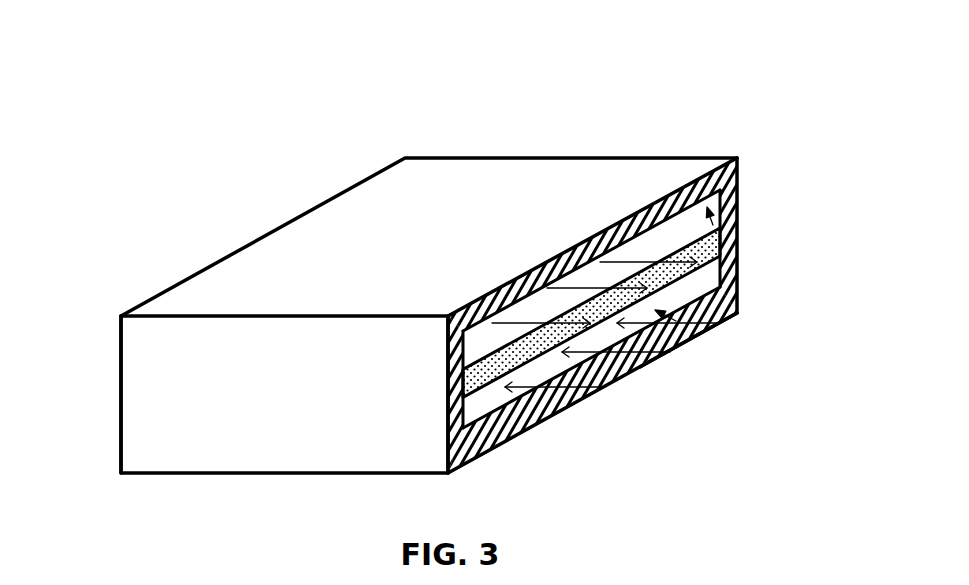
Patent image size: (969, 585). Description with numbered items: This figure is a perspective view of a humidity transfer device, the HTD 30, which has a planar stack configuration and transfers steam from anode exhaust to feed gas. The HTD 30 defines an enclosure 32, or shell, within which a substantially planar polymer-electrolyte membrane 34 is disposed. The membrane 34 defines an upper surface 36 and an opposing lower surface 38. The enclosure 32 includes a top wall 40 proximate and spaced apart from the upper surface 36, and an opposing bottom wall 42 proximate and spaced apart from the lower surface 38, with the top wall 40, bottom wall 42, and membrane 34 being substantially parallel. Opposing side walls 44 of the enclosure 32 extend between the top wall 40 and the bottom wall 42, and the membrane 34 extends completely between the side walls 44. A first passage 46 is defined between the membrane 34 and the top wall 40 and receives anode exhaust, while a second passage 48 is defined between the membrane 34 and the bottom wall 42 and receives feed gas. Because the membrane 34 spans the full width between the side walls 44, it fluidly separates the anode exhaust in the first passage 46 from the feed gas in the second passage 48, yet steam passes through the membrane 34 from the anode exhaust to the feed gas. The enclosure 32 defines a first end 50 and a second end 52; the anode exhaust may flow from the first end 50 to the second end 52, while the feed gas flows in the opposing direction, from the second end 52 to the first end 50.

The HTD 30 is at (632, 86).
The enclosure 32 is at (358, 223).
The membrane 34 is at (734, 253).
The upper surface 36 is at (665, 223).
The lower surface 38 is at (555, 369).
The top wall 40 is at (560, 252).
The bottom wall 42 is at (530, 422).
The side walls 44 is at (333, 440).
The first passage 46 is at (539, 310).
The second passage 48 is at (735, 313).
The first end 50 is at (746, 181).
The second end 52 is at (109, 364).